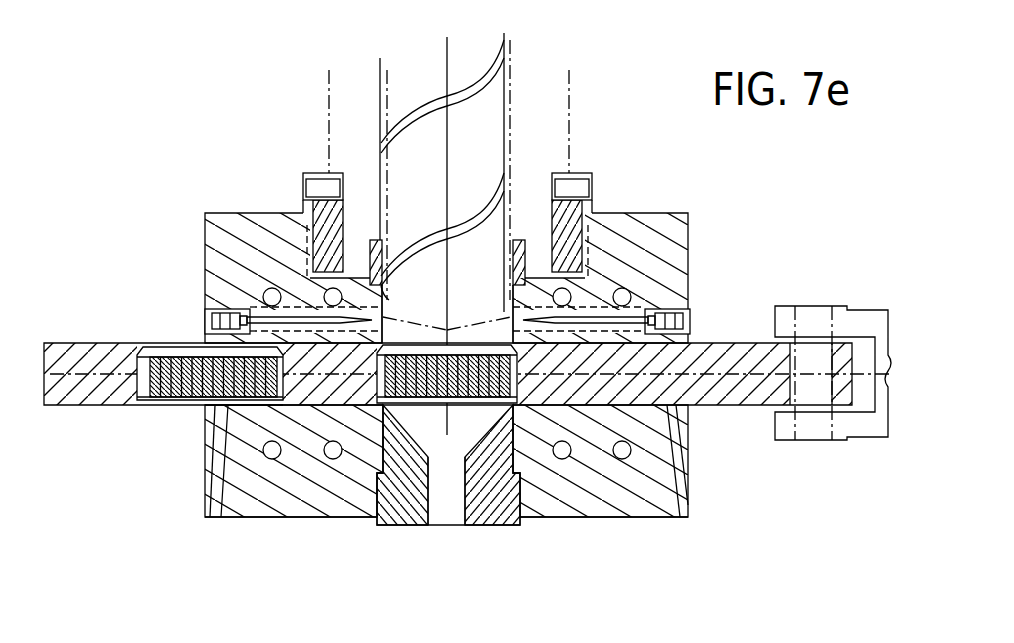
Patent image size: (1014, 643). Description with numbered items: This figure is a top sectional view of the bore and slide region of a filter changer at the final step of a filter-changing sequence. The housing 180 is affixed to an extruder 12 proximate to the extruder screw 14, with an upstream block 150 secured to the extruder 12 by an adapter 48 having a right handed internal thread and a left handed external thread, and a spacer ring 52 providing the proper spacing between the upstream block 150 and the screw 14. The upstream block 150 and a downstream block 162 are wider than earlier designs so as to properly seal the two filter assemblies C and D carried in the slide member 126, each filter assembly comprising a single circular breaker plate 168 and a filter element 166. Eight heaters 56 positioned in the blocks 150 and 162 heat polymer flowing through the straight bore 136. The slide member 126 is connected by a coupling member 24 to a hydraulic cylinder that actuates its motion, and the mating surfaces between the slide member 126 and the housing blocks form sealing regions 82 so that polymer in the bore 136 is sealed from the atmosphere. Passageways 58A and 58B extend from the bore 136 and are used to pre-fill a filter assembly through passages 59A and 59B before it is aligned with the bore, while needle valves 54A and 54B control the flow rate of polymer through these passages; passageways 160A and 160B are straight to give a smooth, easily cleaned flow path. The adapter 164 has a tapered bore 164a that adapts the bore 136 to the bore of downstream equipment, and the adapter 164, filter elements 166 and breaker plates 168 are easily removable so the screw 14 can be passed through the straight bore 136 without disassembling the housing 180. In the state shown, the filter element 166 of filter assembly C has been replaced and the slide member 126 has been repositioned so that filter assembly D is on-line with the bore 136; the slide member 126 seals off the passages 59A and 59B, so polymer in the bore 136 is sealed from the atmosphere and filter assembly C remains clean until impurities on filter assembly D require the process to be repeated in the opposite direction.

The extruder 12 is at (572, 130).
The extruder screw 14 is at (472, 92).
The coupling member 24 is at (813, 306).
The adapter 48 is at (312, 178).
The spacer ring 52 is at (378, 238).
The needle valve 54A is at (202, 310).
The needle valve 54B is at (690, 318).
The heaters 56 is at (272, 460).
The passageway 58A is at (393, 322).
The passageway 58B is at (508, 312).
The passage 59A is at (380, 346).
The passage 59B is at (513, 346).
The sealing regions 82 is at (202, 408).
The slide member 126 is at (78, 405).
The bore 136 is at (435, 228).
The upstream block 150 is at (205, 222).
The passageway 160A is at (205, 493).
The passageway 160B is at (690, 495).
The downstream block 162 is at (214, 521).
The adapter 164 is at (497, 526).
The bore of adapter 164a is at (445, 526).
The filter element 166 is at (153, 345).
The breaker plate 168 is at (163, 400).
The housing 180 is at (653, 538).
The filter assembly C is at (173, 333).
The filter assembly D is at (419, 413).